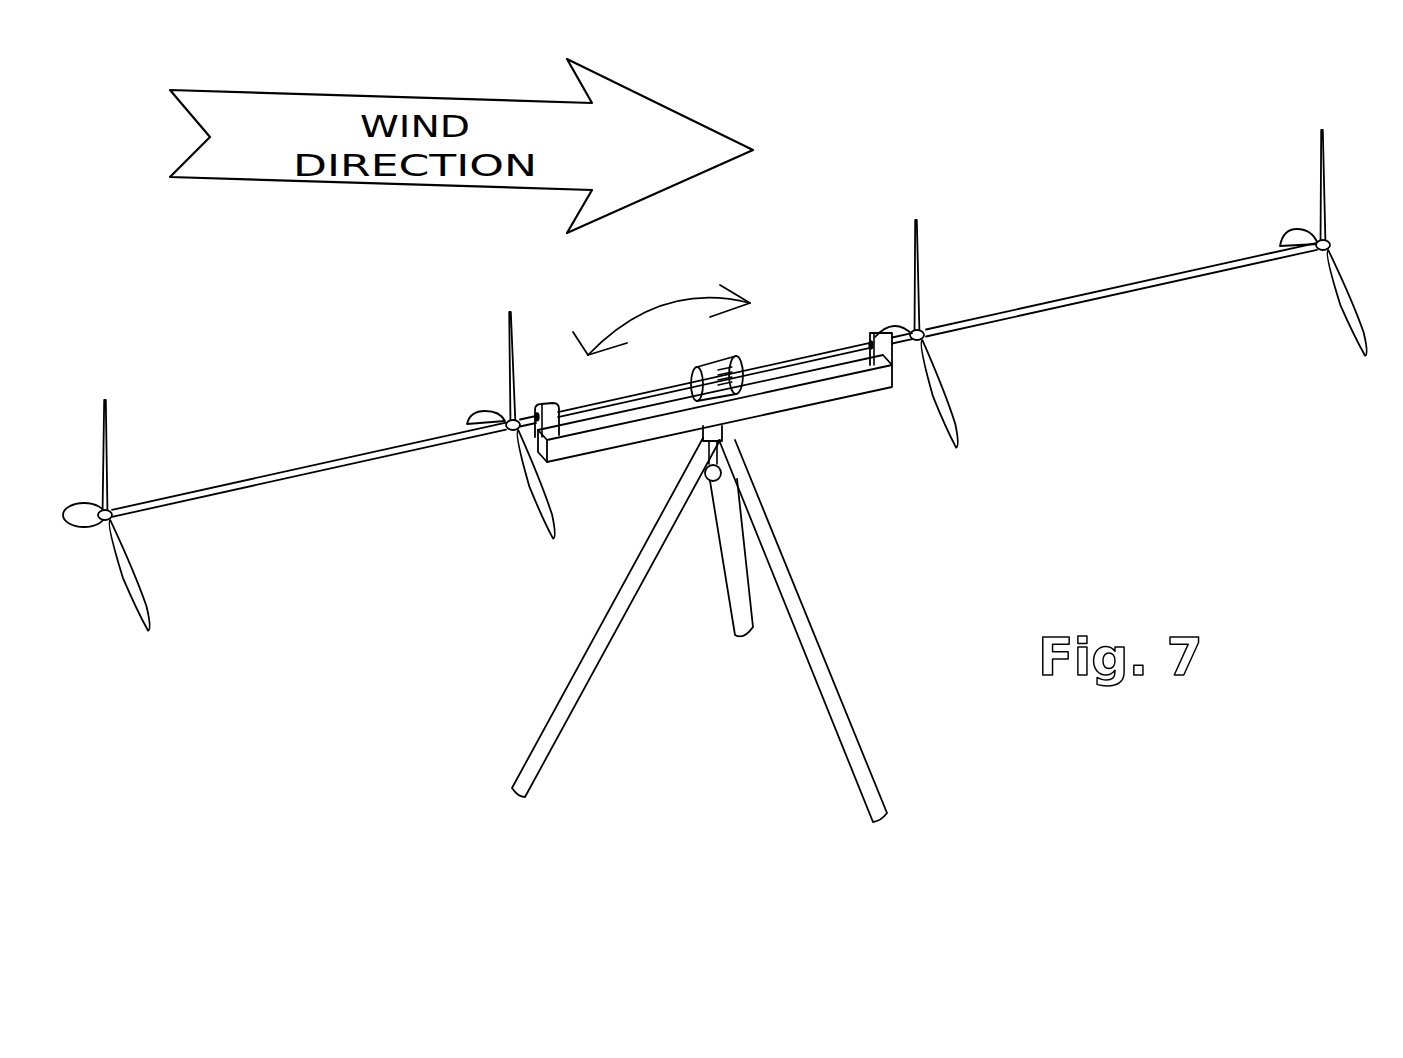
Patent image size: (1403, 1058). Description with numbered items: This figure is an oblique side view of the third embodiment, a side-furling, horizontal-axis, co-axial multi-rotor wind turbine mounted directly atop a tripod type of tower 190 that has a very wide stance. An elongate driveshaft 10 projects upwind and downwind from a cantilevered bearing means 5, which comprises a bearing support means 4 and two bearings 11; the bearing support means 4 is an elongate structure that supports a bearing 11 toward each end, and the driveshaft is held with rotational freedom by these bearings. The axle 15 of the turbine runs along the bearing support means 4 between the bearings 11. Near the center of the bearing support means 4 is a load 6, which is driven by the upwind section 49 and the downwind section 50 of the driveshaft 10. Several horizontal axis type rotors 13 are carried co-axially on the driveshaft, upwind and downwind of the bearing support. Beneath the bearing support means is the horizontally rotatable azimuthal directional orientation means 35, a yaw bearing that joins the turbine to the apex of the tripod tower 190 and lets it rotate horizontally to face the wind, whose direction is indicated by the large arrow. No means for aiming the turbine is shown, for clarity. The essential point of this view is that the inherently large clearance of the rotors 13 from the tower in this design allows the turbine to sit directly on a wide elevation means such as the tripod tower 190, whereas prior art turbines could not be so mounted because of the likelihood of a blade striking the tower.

The elongate driveshaft 10 is at (375, 490).
The bearing support means 4 is at (610, 447).
The cantilevered bearing means 5 is at (813, 432).
The load 6 is at (710, 363).
The bearing 11 is at (547, 403).
The horizontal axis type rotor 13 is at (958, 420).
The axle 15 is at (810, 353).
The horizontally rotatable azimuthal directional orientation means (yaw bearing) 35 is at (723, 425).
The upwind section of the driveshaft 49 is at (213, 498).
The downwind section of the driveshaft 50 is at (1177, 283).
The tripod type of tower 190 is at (860, 742).